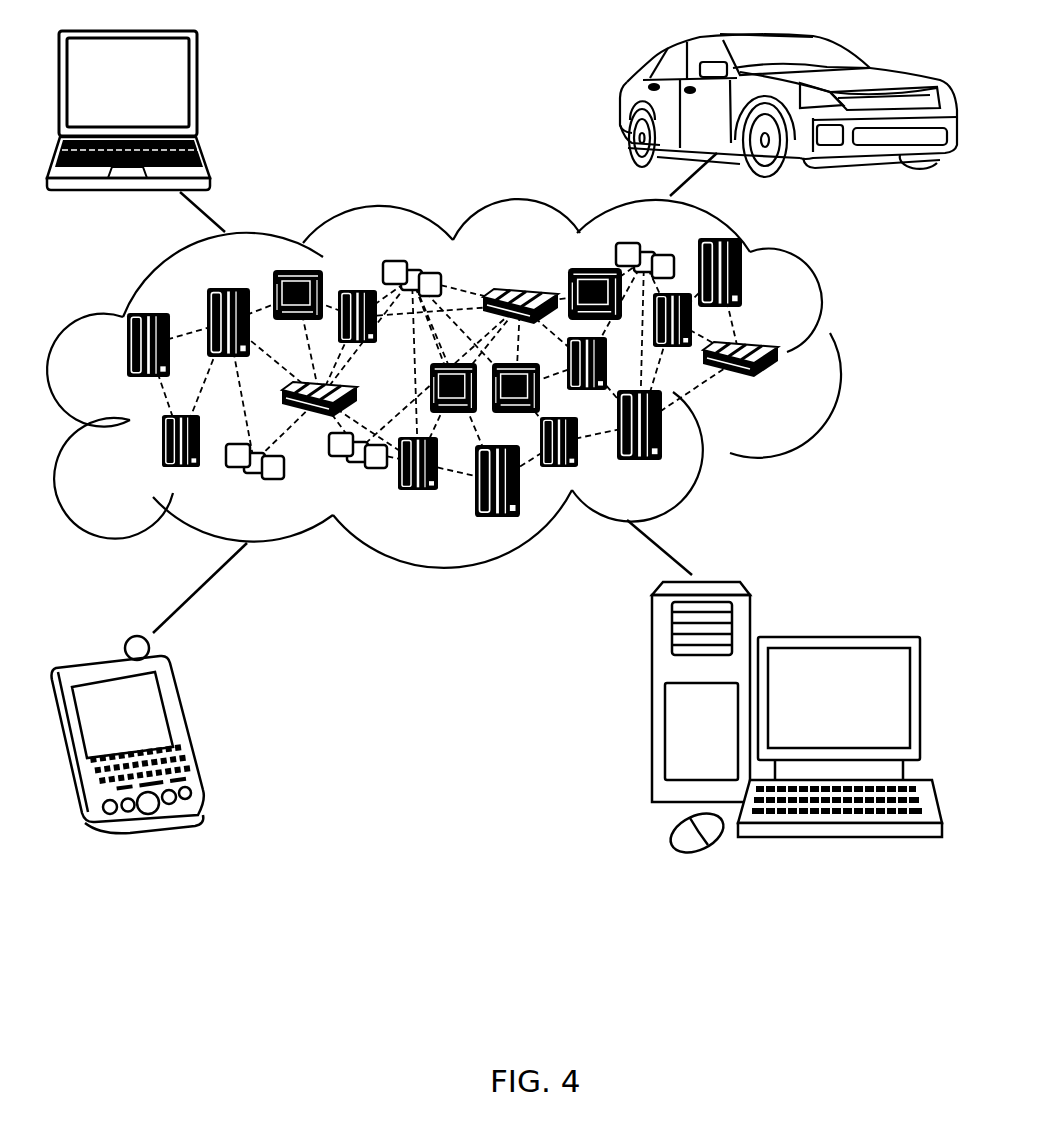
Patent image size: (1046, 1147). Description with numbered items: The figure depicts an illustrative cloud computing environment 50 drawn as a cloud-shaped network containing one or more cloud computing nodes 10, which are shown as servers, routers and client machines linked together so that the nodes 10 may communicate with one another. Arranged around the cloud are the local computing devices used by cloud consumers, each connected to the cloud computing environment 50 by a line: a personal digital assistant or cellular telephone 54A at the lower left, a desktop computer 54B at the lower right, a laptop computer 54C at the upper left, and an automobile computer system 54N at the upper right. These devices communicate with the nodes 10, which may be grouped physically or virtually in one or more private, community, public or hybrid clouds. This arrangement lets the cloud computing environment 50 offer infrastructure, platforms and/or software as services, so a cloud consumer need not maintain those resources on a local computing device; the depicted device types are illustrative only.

The cloud computing nodes 10 is at (782, 387).
The cloud computing environment 50 is at (832, 353).
The personal digital assistant (PDA) or cellular telephone 54A is at (183, 728).
The desktop computer 54B is at (838, 637).
The laptop computer 54C is at (198, 91).
The automobile computer system 54N is at (622, 105).